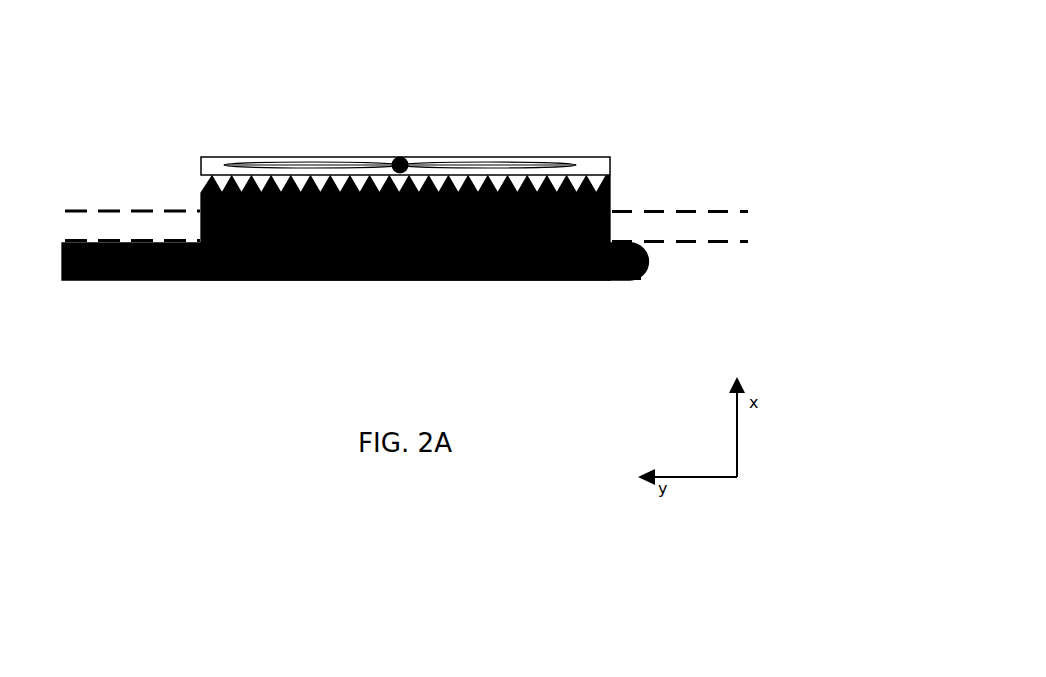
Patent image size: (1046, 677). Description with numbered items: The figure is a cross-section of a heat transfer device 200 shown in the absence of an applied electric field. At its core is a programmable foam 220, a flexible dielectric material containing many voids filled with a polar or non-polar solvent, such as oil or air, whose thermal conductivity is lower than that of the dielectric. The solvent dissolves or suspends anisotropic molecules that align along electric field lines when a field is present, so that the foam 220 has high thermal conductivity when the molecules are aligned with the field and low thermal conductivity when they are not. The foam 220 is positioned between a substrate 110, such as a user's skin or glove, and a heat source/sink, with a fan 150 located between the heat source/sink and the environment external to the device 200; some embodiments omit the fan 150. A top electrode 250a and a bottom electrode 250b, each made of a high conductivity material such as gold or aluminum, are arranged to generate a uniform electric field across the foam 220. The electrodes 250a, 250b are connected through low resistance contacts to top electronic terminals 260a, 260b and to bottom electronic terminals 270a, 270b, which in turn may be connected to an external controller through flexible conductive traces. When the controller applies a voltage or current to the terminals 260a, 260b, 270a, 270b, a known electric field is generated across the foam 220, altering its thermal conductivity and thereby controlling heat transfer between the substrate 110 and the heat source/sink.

The heat transfer device 200 is at (63, 46).
The substrate 110 is at (582, 280).
The fan 150 is at (510, 118).
The programmable foam 220 is at (407, 280).
The top electrode 250a is at (547, 185).
The bottom electrode 250b is at (622, 280).
The top electronic terminal 260a is at (158, 211).
The top electronic terminal 260b is at (830, 165).
The bottom electronic terminal 270a is at (137, 280).
The bottom electronic terminal 270b is at (718, 243).